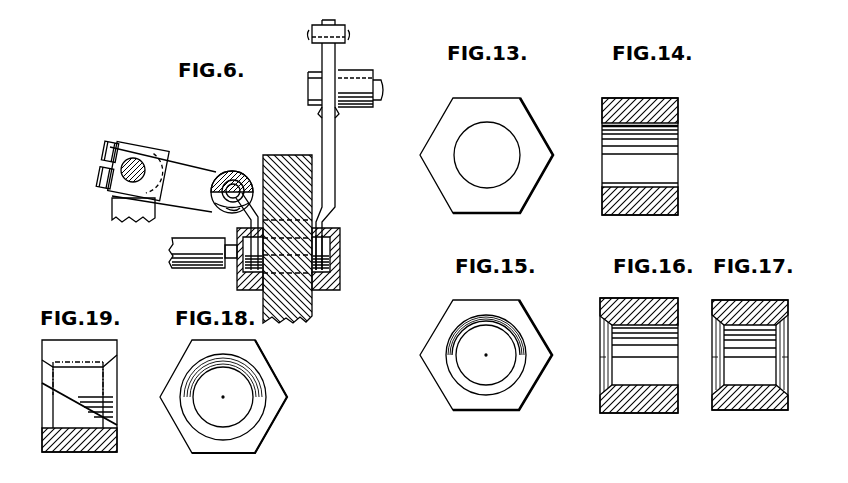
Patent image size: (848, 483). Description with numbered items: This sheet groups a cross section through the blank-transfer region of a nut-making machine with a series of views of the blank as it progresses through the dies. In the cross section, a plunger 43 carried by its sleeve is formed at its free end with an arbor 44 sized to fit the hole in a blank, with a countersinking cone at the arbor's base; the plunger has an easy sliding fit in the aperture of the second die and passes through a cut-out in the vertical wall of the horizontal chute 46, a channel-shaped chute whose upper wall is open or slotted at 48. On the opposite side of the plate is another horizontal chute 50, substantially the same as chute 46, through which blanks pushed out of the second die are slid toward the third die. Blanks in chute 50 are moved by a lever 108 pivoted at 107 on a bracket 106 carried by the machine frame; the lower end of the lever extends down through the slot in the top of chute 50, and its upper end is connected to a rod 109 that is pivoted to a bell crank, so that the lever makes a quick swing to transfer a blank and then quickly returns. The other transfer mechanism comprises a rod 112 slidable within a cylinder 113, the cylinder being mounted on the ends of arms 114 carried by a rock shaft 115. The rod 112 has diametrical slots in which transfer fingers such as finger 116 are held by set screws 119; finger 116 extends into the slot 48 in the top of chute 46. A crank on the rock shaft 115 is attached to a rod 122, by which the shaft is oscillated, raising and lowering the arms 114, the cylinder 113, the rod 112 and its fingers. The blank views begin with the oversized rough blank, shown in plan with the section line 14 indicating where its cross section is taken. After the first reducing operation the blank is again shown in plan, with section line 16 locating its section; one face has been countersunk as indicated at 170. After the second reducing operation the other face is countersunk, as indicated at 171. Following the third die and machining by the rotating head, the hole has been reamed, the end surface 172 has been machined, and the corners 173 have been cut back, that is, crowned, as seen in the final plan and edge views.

In FIG. 6, the rod 109 is at (340, 34).
In FIG. 6, the bracket 106 is at (365, 72).
In FIG. 6, the pivot 107 is at (383, 89).
In FIG. 6, the lever 108 is at (336, 153).
In FIG. 6, the slot 48 is at (338, 213).
In FIG. 6, the horizontal chute 50 is at (341, 263).
In FIG. 6, the arbor 44 is at (230, 268).
In FIG. 6, the plunger 43 is at (172, 245).
In FIG. 6, the set screw 119 is at (226, 209).
In FIG. 6, the horizontal chute 46 is at (240, 233).
In FIG. 6, the transfer finger 116 is at (212, 190).
In FIG. 6, the cylinder 113 is at (229, 172).
In FIG. 6, the arm 114 is at (181, 166).
In FIG. 6, the rock shaft 115 is at (139, 157).
In FIG. 6, the rod 112 is at (239, 187).
In FIG. 6, the rod 122 is at (258, 210).
In FIG. 13, the section line 14— 14 is at (481, 236).
In FIG. 15, the section line 16— 16 is at (480, 426).
In FIG. 15, the countersink 170 is at (517, 379).
In FIG. 16, the countersink 170 is at (603, 392).
In FIG. 17, the countersink 170 is at (714, 389).
In FIG. 19, the countersink 170 is at (42, 432).
In FIG. 17, the countersink 171 is at (788, 391).
In FIG. 18, the countersink 171 is at (255, 386).
In FIG. 19, the countersink 171 is at (114, 428).
In FIG. 18, the end surface 172 is at (268, 432).
In FIG. 18, the corners 173 is at (275, 452).